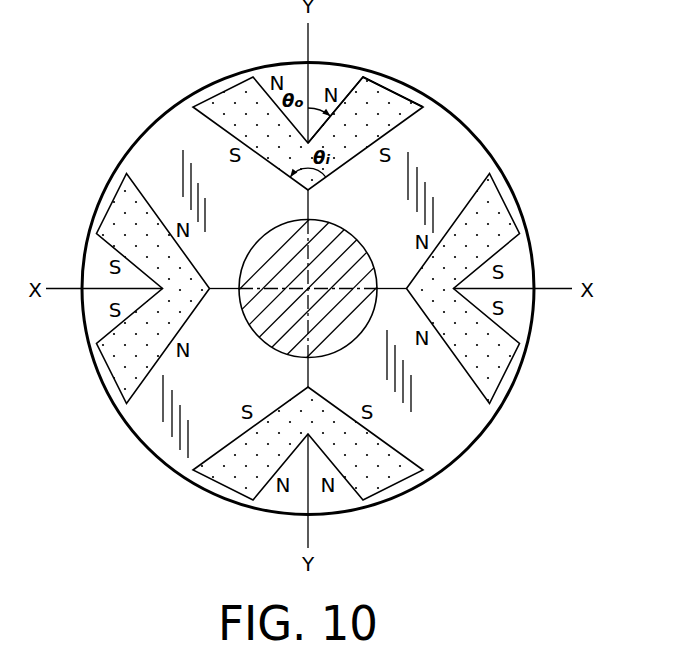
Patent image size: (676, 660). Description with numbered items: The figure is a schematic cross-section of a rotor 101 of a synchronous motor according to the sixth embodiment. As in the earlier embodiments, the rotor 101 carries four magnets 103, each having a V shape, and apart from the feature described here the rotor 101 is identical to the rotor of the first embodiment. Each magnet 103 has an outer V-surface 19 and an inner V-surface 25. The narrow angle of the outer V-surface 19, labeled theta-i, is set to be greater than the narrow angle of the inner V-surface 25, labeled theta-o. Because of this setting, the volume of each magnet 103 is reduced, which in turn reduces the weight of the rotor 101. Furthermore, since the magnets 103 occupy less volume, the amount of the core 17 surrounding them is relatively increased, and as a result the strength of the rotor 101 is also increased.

The rotor 101 is at (348, 286).
The core 17 is at (458, 428).
The magnet 103 is at (382, 100).
The inner V-surface 25 is at (345, 92).
The outer V-surface 19 is at (410, 122).